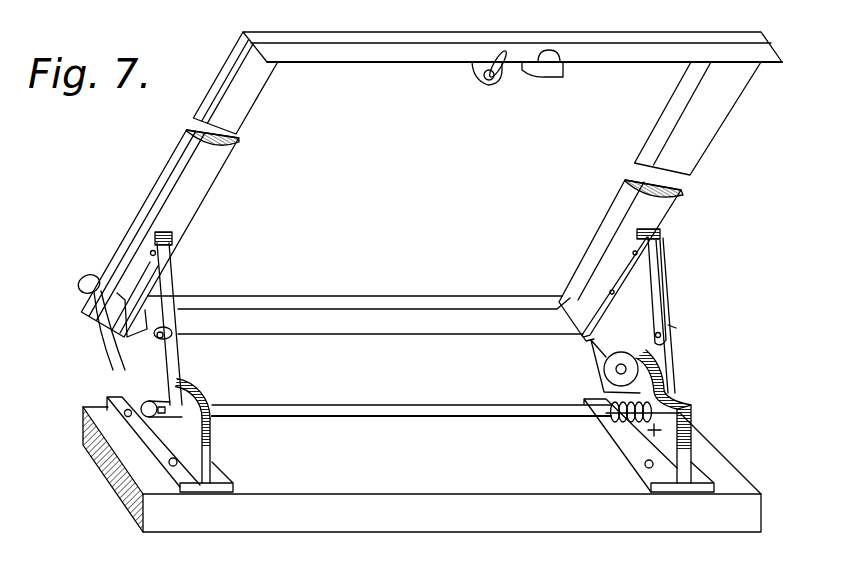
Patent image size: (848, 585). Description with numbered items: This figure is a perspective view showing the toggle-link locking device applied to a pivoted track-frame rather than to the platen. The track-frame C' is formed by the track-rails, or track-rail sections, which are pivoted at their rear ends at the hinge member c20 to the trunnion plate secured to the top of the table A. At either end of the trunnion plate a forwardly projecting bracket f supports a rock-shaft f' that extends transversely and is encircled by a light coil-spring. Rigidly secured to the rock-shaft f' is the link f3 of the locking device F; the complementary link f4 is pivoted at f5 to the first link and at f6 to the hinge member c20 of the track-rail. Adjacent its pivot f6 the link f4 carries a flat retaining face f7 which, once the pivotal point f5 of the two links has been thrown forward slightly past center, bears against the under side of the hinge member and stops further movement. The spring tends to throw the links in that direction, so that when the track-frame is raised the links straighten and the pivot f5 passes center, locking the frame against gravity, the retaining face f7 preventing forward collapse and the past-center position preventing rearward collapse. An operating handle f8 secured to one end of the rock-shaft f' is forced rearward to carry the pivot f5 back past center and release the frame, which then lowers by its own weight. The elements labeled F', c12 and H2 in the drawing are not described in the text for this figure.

The table A is at (741, 514).
The track-frame C' is at (431, 184).
The frame bottom bar F' is at (365, 330).
The rock-shaft f' is at (436, 432).
The bracket c12 is at (208, 452).
The retaining face f7 is at (172, 238).
The pivot f6 is at (151, 253).
The link f3 is at (179, 365).
The complementary link f4 is at (170, 283).
The pivot f5 is at (690, 305).
The bracket f is at (686, 315).
The locking device F is at (697, 322).
The hinge member c20 is at (187, 292).
The operating handle f8 is at (85, 287).
The catch H2 is at (490, 85).